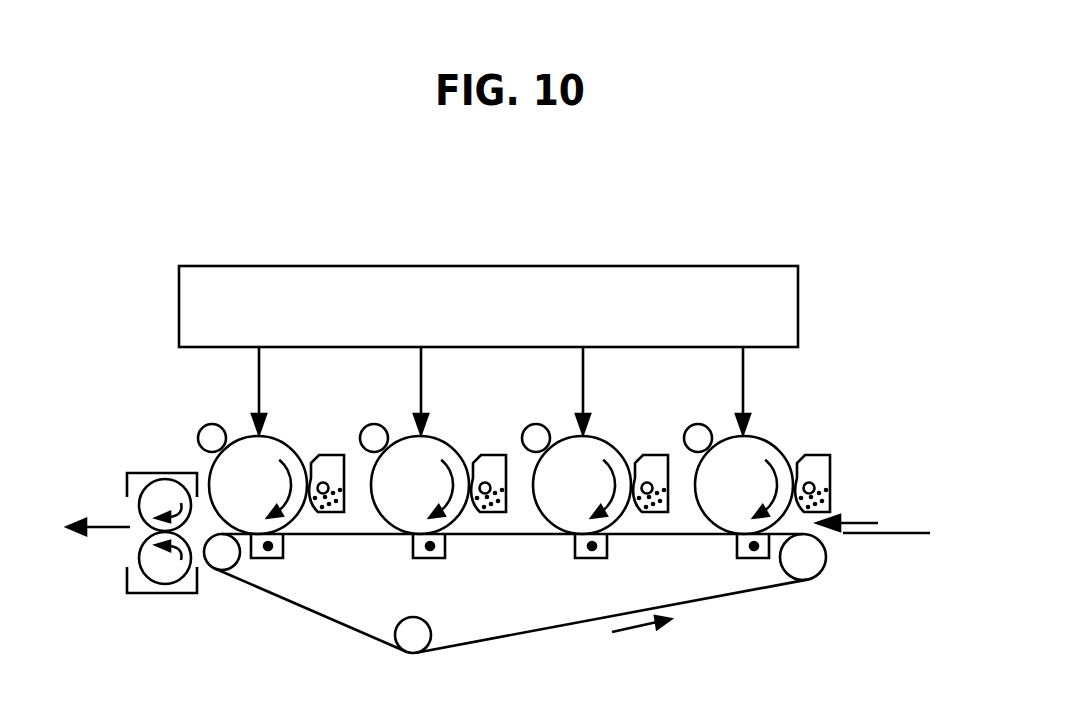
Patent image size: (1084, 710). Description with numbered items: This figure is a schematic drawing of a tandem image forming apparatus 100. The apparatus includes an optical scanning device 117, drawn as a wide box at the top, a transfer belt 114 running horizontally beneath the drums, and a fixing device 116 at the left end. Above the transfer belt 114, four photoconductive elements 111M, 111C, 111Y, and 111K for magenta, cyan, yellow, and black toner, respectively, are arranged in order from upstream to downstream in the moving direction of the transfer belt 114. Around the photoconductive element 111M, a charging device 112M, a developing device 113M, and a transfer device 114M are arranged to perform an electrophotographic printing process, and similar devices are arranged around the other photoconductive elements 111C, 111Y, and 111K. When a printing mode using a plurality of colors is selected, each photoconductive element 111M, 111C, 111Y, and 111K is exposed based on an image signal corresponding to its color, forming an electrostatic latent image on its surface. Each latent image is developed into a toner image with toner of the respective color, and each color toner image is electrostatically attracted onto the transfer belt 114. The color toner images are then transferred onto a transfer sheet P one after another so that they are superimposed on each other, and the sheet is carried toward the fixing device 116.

The image forming apparatus 100 is at (788, 212).
The optical scanning device 117 is at (799, 292).
The photoconductive element 111K is at (258, 485).
The photoconductive element 111Y is at (420, 485).
The photoconductive element 111C is at (582, 485).
The photoconductive element 111M is at (744, 485).
The charging device 112M is at (693, 426).
The developing device 113M is at (798, 453).
The transfer belt 114 is at (515, 635).
The transfer device 114M is at (745, 558).
The fixing device 116 is at (150, 593).
The transfer sheet P is at (883, 535).